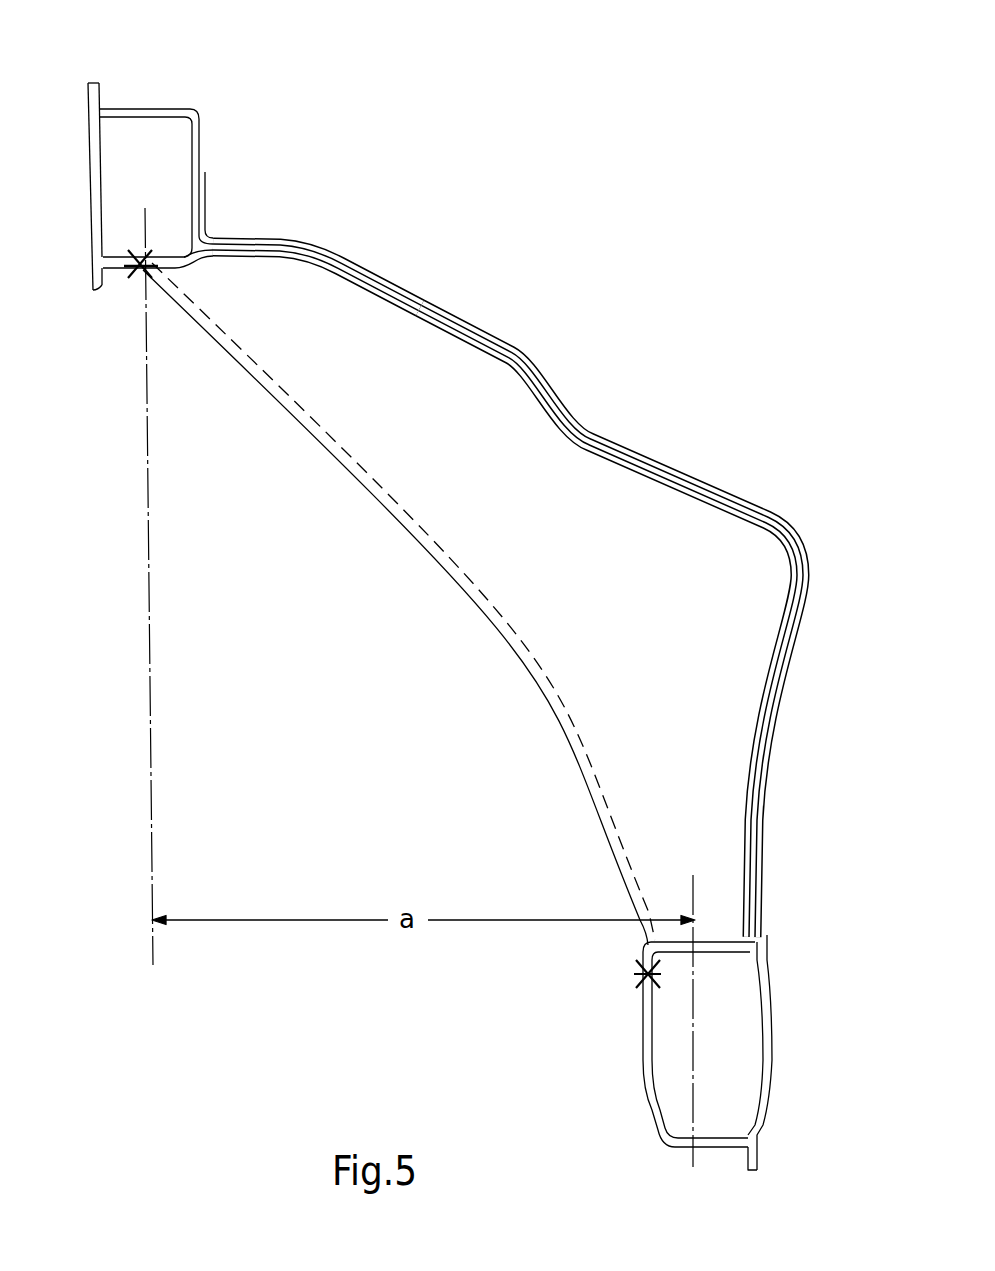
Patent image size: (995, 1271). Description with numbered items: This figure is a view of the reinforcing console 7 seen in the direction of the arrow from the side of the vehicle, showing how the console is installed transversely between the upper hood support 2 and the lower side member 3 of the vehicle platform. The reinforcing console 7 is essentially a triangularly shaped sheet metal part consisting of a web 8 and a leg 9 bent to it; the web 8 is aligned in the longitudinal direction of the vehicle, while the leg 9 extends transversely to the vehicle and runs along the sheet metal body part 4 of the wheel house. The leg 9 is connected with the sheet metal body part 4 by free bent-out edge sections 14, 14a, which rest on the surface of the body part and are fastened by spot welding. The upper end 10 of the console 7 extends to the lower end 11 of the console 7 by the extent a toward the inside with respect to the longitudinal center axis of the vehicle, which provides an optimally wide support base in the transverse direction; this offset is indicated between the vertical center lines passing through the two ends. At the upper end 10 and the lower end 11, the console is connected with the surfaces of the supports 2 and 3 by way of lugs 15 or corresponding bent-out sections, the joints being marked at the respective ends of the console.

The upper hood support 2 is at (156, 108).
The lower side member 3 is at (772, 1089).
The sheet metal body part 4 is at (588, 430).
The reinforcing console 7 is at (399, 604).
The web 8 is at (508, 647).
The leg 9 is at (503, 567).
The upper end 10 is at (141, 306).
The lower end 11 is at (625, 988).
The free bent-out edge section 14 is at (757, 710).
The free bent-out edge section 14a is at (497, 362).
The lug 15 is at (130, 272).